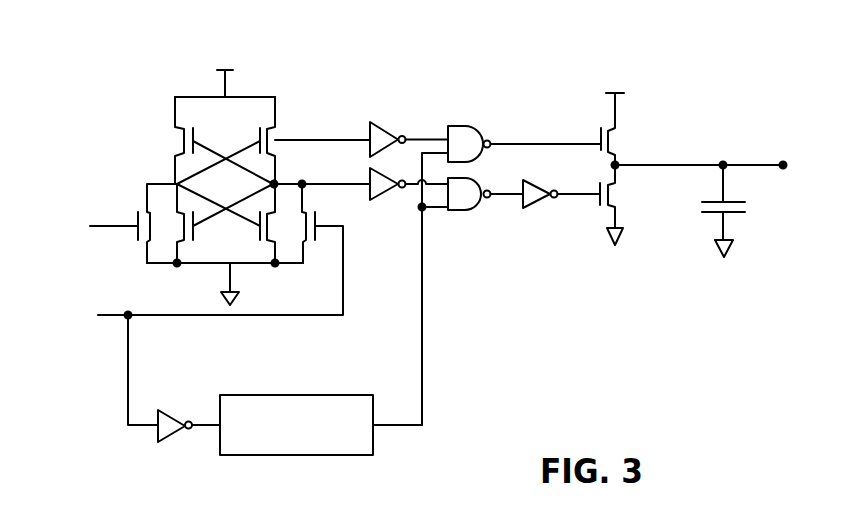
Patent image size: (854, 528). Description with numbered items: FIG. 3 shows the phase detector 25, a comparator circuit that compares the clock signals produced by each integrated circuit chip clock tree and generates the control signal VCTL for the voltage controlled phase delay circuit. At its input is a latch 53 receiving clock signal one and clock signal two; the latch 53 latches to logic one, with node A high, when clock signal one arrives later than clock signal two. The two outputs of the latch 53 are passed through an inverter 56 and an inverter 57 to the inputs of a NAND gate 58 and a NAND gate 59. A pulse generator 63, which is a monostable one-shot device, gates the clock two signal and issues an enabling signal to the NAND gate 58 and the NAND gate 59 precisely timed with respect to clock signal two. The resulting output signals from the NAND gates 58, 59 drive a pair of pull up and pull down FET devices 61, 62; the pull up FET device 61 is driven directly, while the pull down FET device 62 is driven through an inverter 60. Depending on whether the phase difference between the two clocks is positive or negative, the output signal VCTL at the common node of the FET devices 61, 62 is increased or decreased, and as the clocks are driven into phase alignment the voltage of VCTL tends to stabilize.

The phase detector 25 is at (562, 365).
The latch 53 is at (236, 128).
The inverter 56 is at (387, 120).
The inverter 57 is at (383, 196).
The NAND gate 58 is at (463, 126).
The NAND gate 59 is at (467, 212).
The inverter 60 is at (535, 206).
The pull up FET device 61 is at (600, 138).
The pull down FET device 62 is at (602, 212).
The pulse generator 63 is at (307, 455).